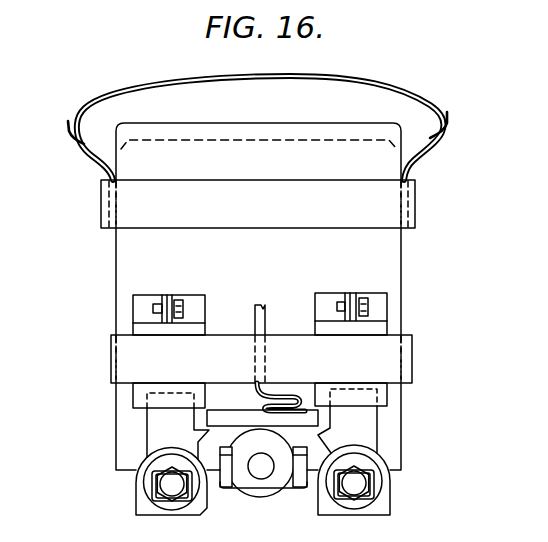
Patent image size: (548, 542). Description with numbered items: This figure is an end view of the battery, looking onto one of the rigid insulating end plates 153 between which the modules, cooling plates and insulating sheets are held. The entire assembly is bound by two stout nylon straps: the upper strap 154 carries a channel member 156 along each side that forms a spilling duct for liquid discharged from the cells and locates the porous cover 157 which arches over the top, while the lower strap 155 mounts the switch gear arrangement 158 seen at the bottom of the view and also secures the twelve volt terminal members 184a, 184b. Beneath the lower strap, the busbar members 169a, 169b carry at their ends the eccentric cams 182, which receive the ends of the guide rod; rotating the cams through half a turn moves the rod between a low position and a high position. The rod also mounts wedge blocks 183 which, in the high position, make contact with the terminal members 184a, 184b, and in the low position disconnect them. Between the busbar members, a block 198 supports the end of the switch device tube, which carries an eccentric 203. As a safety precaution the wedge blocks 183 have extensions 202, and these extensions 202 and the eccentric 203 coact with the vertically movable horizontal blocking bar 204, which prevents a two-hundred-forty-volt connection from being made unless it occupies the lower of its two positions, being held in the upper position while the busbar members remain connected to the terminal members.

The insulating end plate 153 is at (387, 272).
The upper strap 154 is at (392, 198).
The lower strap 155 is at (393, 355).
The channel member 156 is at (85, 153).
The porous cover 157 is at (348, 84).
The switch gear arrangement 158 is at (110, 394).
The busbar member 169a is at (141, 512).
The busbar member 169b is at (385, 511).
The eccentric cam 182 is at (160, 486).
The wedge block 183 is at (155, 423).
The twelve volt positive terminal member 184a is at (137, 305).
The twelve volt terminal member 184b is at (380, 312).
The block 198 is at (300, 478).
The extension 202 is at (202, 440).
The eccentric 203 is at (243, 468).
The blocking bar 204 is at (316, 421).